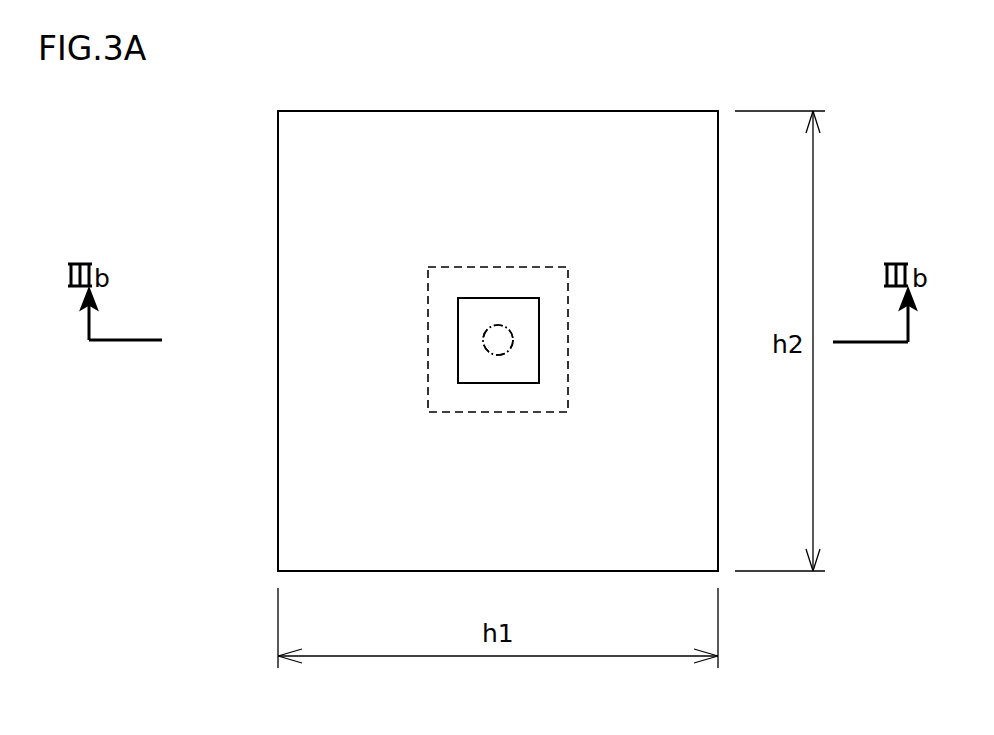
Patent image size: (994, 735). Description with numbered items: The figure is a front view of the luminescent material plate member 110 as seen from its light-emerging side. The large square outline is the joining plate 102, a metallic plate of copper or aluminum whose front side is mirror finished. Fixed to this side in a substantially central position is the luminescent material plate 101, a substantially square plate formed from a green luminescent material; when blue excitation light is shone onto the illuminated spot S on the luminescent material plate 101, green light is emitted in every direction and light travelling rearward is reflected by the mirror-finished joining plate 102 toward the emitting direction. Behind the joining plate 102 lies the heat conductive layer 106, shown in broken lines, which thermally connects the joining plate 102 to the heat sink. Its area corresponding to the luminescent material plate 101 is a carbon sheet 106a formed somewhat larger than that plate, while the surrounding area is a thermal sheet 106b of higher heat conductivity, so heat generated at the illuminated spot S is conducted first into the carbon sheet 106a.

The luminescent material plate member 110 is at (756, 85).
The joining plate 102 is at (344, 156).
The luminescent material plate 101 is at (491, 311).
The illuminated spot S is at (503, 326).
The heat conductive layer 106 is at (363, 365).
The carbon sheet 106a is at (445, 376).
The thermal sheet 106b is at (345, 307).